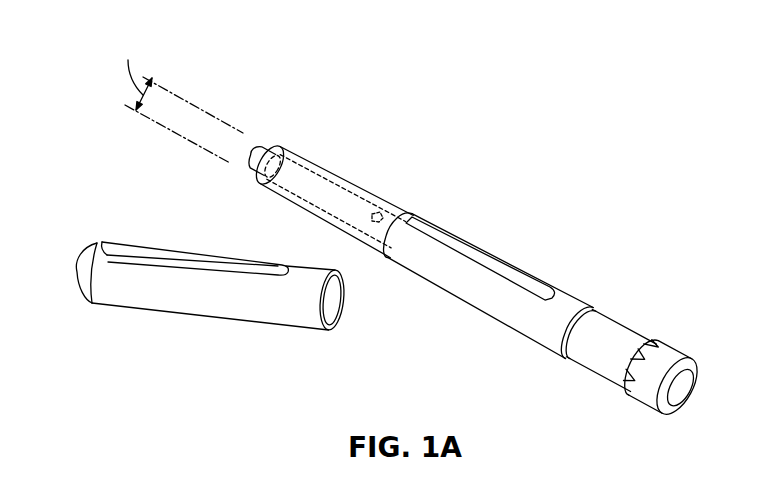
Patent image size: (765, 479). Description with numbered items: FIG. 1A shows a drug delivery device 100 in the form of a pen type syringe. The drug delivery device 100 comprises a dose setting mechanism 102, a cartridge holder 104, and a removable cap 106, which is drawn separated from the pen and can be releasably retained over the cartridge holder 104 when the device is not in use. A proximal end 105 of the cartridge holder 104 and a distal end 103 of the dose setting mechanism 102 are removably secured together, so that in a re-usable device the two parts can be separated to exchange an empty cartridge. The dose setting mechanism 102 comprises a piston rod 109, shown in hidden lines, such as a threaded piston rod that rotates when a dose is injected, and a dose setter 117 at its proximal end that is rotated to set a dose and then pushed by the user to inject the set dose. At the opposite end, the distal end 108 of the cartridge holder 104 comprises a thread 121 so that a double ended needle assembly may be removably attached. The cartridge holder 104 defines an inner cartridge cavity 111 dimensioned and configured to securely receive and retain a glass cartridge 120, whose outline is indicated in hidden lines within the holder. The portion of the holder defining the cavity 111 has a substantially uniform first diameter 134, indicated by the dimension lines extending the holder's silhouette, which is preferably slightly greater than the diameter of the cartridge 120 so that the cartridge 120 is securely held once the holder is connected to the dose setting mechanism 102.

The drug delivery device 100 is at (562, 67).
The dose setting mechanism 102 is at (572, 260).
The distal end of the dose setting mechanism 103 is at (393, 262).
The cartridge holder 104 is at (403, 118).
The proximal end of the cartridge holder 105 is at (406, 210).
The removable cap 106 is at (107, 222).
The distal end of the cartridge holder 108 is at (262, 146).
The piston rod 109 is at (376, 207).
The inner cartridge cavity 111 is at (305, 188).
The dose setter 117 is at (637, 318).
The glass cartridge 120 is at (326, 188).
The thread 121 is at (271, 151).
The diameter D1 134 is at (128, 92).